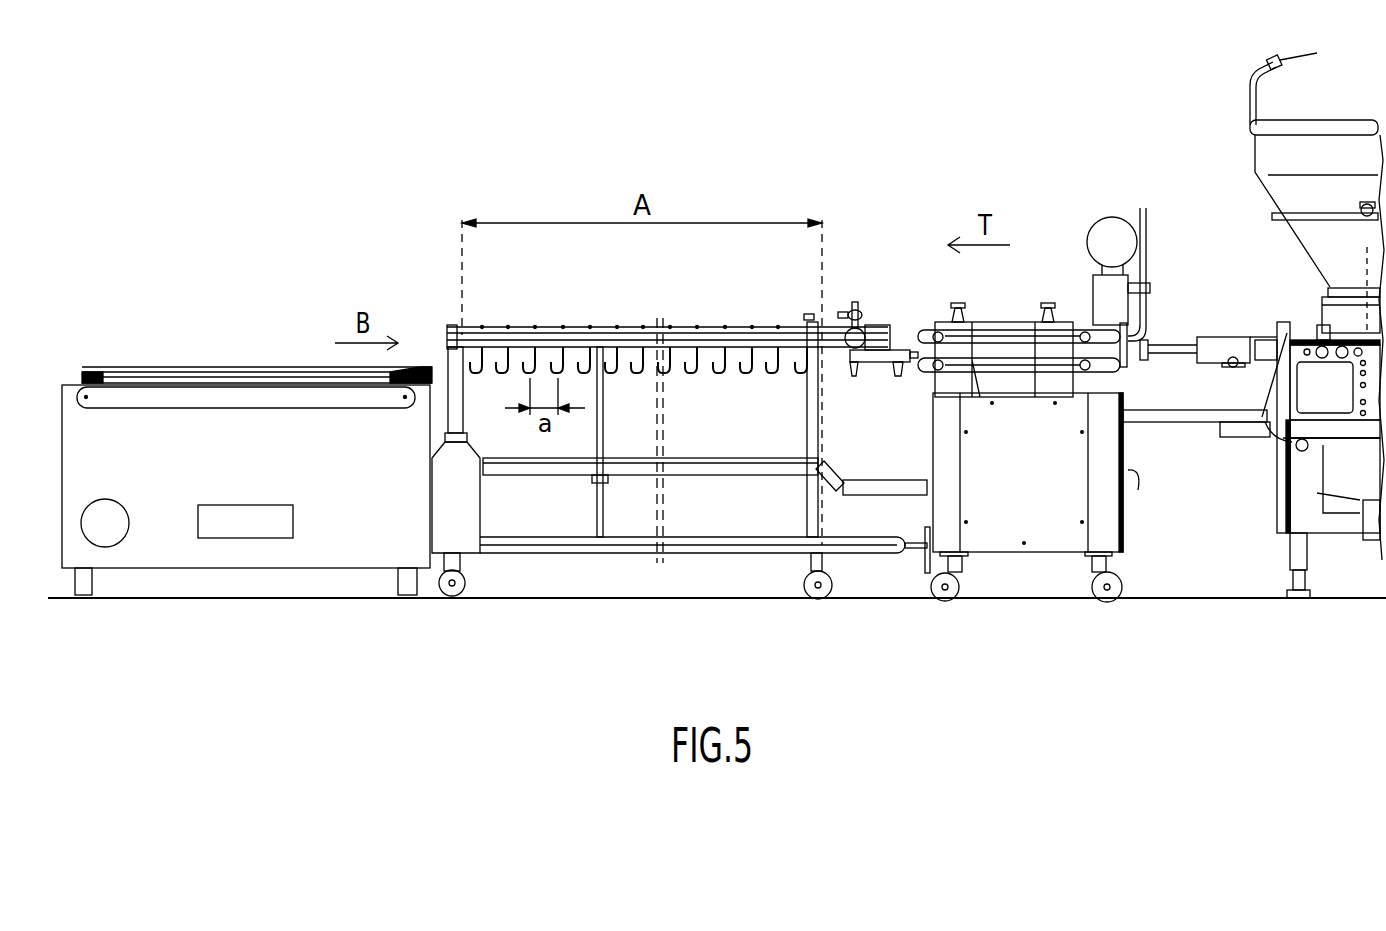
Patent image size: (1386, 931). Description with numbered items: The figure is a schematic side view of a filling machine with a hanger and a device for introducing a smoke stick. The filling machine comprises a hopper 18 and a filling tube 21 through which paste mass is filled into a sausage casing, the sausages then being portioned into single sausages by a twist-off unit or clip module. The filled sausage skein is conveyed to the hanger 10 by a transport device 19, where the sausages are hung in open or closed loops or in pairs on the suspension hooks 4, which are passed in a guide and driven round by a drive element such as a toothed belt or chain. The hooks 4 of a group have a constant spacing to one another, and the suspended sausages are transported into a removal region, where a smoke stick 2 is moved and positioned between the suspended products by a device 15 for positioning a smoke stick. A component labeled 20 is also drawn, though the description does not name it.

The smoke stick 2 is at (283, 378).
The suspension hooks 4 is at (508, 327).
The hanger 10 is at (752, 312).
The device for positioning a smoke stick 15 is at (150, 367).
The hopper 18 is at (1240, 182).
The transport device 19 is at (997, 333).
The vessel 20 is at (1112, 217).
The filling tube 21 is at (1178, 333).